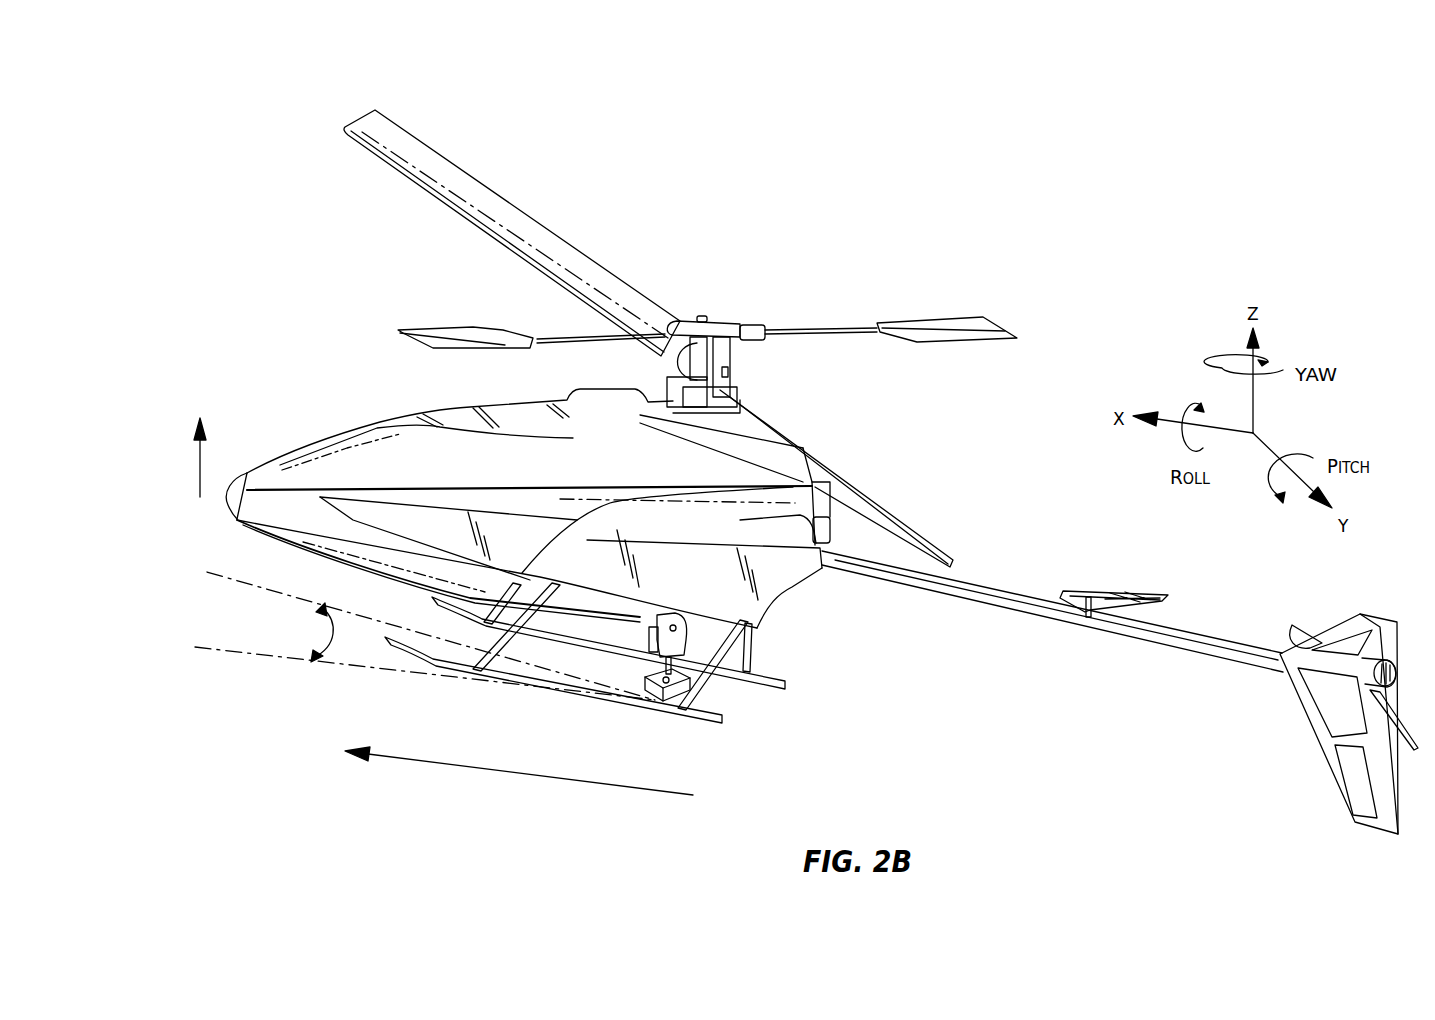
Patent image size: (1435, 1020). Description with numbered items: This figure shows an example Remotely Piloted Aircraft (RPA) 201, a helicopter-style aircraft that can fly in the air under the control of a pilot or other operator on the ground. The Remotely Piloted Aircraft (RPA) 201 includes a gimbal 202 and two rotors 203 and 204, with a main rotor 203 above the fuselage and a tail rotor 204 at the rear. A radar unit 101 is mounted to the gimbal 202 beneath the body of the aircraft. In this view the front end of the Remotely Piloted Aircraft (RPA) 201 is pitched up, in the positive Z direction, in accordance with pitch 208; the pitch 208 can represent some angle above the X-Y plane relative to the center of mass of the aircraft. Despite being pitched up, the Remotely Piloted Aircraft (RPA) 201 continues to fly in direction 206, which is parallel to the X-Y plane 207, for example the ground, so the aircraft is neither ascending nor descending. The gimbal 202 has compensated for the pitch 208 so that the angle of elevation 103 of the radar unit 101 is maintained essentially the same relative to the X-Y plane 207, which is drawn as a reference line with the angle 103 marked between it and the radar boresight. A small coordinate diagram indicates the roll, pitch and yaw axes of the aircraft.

The Remotely Piloted Aircraft (RPA) 201 is at (812, 611).
The rotor 203 is at (680, 318).
The rotor 204 is at (1310, 632).
The gimbal 202 is at (688, 640).
The radar unit 101 is at (658, 690).
The pitch 208 is at (200, 468).
The angle of elevation 103 is at (320, 608).
The X-Y plane 207 is at (225, 656).
The direction 206 is at (505, 775).